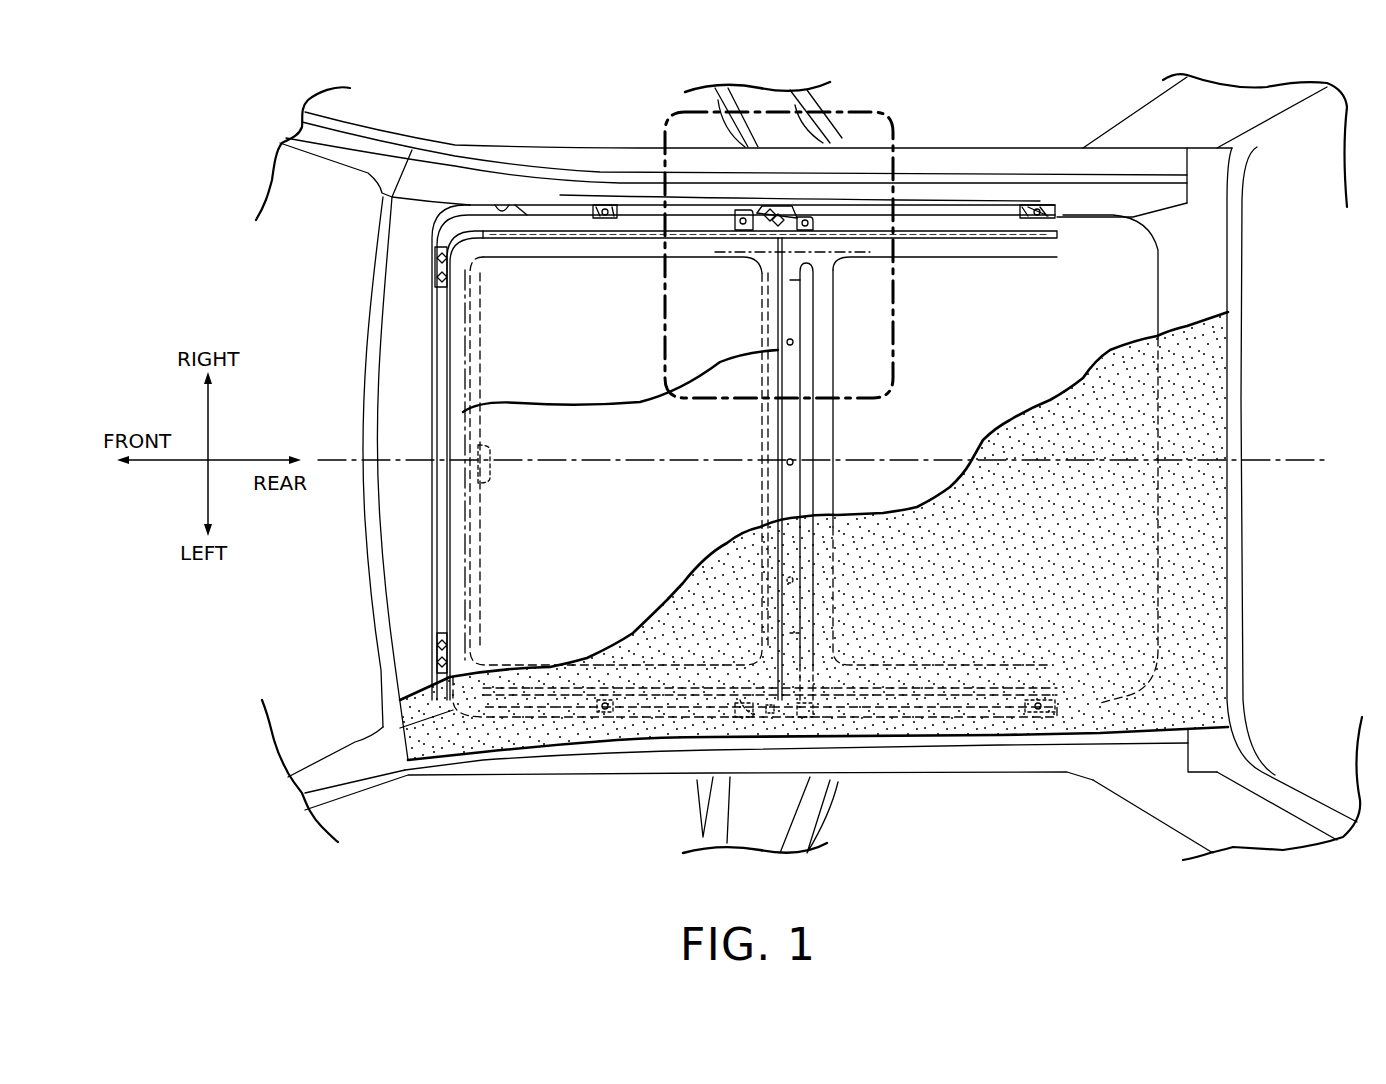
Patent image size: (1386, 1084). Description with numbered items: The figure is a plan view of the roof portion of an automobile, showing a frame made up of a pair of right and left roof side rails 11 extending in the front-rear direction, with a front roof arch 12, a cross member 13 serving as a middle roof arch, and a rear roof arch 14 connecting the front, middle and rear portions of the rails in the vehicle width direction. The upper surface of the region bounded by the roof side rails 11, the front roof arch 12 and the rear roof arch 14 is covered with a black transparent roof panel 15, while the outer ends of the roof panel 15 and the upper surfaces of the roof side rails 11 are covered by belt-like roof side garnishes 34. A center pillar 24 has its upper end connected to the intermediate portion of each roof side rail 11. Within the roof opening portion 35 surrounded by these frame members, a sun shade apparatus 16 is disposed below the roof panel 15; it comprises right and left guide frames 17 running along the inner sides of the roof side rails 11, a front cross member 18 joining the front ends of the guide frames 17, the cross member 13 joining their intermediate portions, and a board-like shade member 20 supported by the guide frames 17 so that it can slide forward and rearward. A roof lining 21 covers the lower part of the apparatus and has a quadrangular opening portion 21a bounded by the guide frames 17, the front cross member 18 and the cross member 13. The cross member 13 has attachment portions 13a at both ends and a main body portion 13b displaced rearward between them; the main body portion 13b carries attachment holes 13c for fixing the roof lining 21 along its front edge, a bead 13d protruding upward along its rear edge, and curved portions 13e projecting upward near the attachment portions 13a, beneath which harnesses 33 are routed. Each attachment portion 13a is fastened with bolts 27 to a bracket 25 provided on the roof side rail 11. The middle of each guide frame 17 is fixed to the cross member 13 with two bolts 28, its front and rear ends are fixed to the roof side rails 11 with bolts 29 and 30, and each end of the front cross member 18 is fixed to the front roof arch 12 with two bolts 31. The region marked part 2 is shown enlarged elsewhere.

The roof side rail 11 is at (632, 172).
The front roof arch 12 is at (385, 518).
The cross member 13 is at (803, 432).
The attachment portion 13a is at (760, 212).
The main body portion 13b is at (780, 420).
The attachment hole 13c is at (788, 342).
The bead 13d is at (808, 487).
The curved portion 13e is at (797, 282).
The rear roof arch 14 is at (1213, 292).
The roof panel 15 is at (1008, 602).
The sun shade apparatus 16 is at (547, 205).
The guide frame 17 is at (538, 241).
The front cross member 18 is at (457, 360).
The part 2 is at (664, 299).
The shade member 20 is at (635, 514).
The roof lining 21 is at (760, 461).
The opening portion 21a is at (486, 385).
The center pillar 24 is at (752, 95).
The bracket 25 is at (797, 206).
The bolt 27 is at (770, 210).
The bolt 28 is at (743, 226).
The bolt 29 is at (605, 219).
The bolt 30 is at (1038, 219).
The bolt 31 is at (440, 276).
The harness 33 is at (868, 254).
The roof side garnish 34 is at (578, 158).
The roof opening portion 35 is at (497, 205).